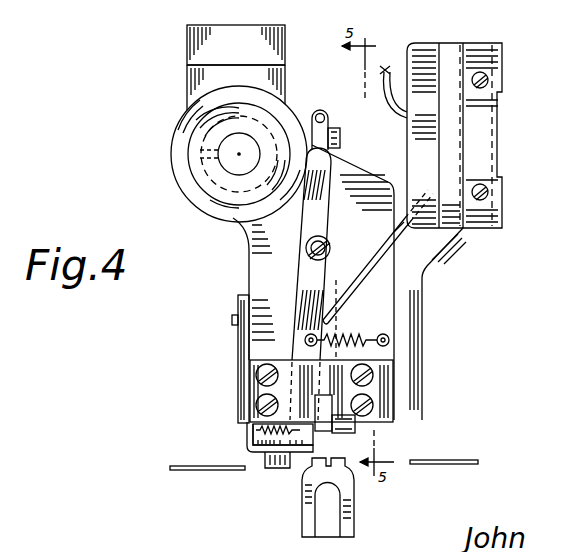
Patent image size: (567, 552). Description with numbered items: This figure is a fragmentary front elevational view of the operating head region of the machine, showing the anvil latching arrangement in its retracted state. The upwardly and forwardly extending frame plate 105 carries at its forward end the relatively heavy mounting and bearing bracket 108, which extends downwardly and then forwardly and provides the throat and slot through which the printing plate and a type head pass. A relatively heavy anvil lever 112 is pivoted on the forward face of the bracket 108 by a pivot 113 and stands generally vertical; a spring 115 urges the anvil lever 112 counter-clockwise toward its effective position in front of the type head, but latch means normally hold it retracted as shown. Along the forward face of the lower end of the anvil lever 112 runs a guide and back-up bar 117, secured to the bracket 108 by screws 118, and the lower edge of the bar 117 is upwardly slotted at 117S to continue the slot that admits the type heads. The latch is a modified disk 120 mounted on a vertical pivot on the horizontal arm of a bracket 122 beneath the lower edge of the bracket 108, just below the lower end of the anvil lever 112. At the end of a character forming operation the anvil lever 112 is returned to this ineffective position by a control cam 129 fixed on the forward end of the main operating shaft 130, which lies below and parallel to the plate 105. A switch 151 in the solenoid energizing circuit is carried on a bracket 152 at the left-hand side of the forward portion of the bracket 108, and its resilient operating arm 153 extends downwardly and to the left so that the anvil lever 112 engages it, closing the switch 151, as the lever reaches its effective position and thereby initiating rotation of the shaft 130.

The frame plate 105 is at (186, 33).
The mounting and bearing bracket 108 is at (183, 76).
The control cam 129 is at (208, 103).
The main operating shaft 130 is at (226, 162).
The anvil lever 112 is at (310, 282).
The pivot 113 is at (306, 246).
The spring 115 is at (348, 336).
The guide and back-up bar 117 is at (384, 373).
The slot 117S is at (371, 418).
The screws 118 is at (250, 372).
The latch disk 120 is at (300, 456).
The bracket 122 is at (253, 456).
The switch 151 is at (450, 124).
The bracket 152 is at (450, 240).
The resilient operating arm 153 is at (365, 268).